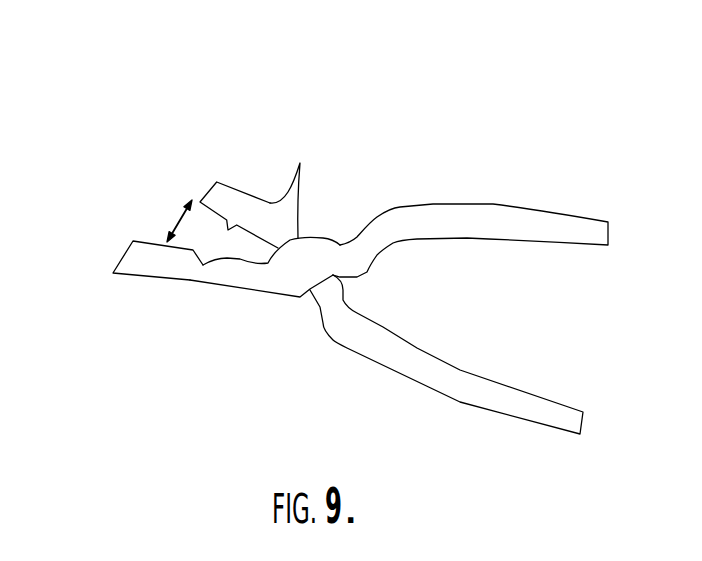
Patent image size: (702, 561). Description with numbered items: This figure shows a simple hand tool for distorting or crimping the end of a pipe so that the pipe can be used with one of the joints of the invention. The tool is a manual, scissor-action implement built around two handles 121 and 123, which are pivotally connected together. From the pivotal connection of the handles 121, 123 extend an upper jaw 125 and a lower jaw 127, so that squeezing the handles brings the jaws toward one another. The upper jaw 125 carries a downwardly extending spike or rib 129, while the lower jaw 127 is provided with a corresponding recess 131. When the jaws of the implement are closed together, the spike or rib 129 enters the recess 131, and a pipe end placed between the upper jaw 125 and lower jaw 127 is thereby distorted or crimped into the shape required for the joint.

The handle 121 is at (492, 223).
The handle 123 is at (465, 388).
The upper jaw 125 is at (216, 193).
The lower jaw 127 is at (158, 267).
The spike or rib 129 is at (235, 215).
The recess 131 is at (191, 278).